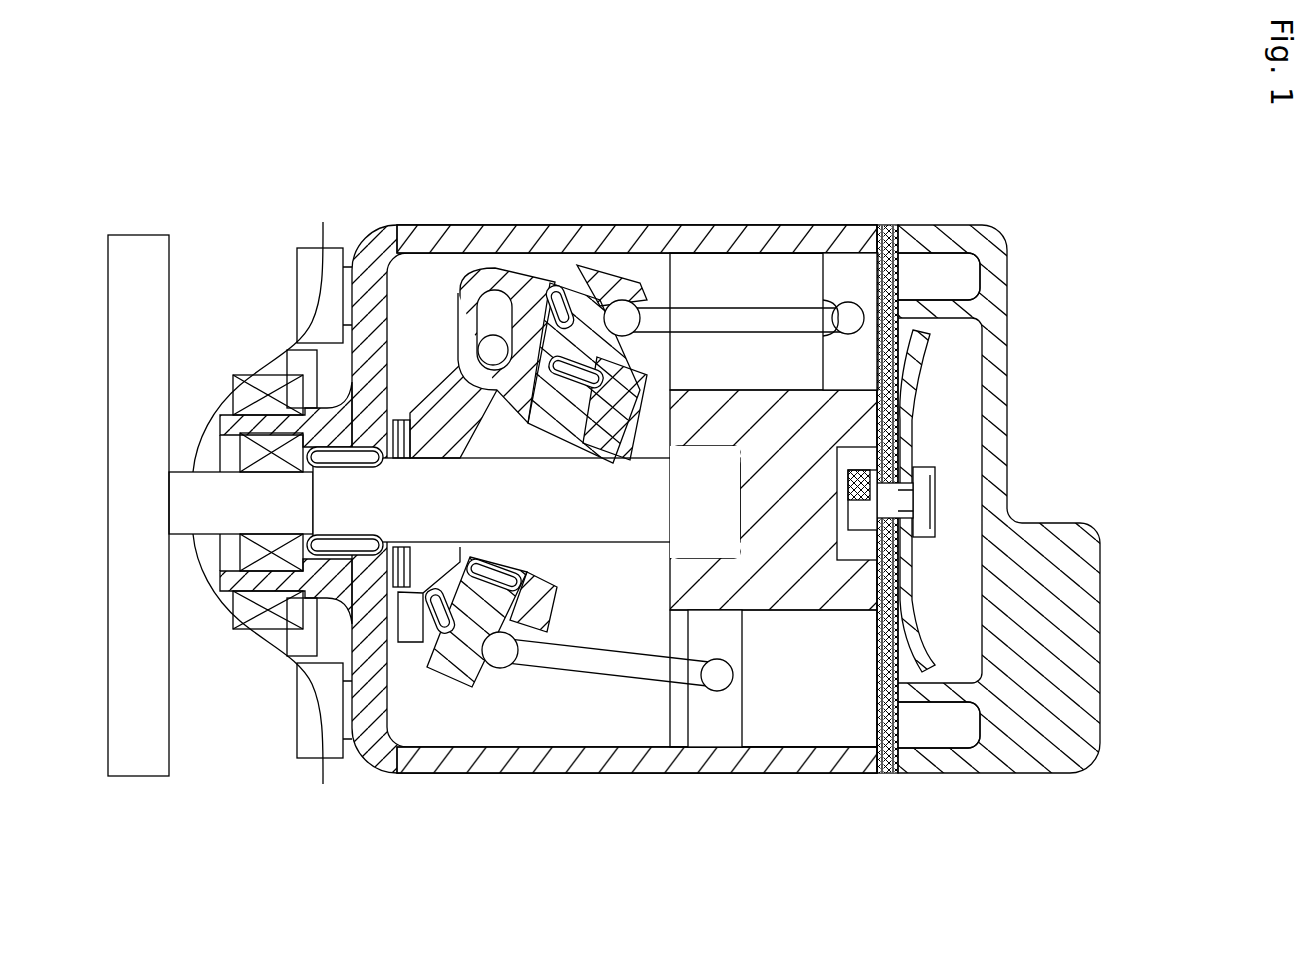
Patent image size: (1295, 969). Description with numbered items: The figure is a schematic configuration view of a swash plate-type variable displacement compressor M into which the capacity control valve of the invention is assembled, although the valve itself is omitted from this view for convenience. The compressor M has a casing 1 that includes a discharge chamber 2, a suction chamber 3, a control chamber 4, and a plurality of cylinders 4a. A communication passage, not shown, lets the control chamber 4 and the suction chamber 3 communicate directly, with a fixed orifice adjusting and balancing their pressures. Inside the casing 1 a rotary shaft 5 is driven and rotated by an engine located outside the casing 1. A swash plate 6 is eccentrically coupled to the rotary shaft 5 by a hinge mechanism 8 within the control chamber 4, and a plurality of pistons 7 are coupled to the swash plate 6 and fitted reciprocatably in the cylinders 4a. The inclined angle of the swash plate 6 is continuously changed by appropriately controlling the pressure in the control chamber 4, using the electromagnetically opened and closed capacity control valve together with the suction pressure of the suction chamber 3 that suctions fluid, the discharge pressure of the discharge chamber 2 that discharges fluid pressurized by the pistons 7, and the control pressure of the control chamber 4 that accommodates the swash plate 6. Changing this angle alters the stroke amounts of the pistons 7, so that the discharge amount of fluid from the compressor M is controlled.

The casing 1 is at (397, 221).
The discharge chamber 2 is at (968, 423).
The suction chamber 3 is at (968, 278).
The control chamber 4 is at (587, 722).
The cylinders 4a is at (768, 262).
The rotary shaft 5 is at (417, 522).
The swash plate 6 is at (560, 303).
The pistons 7 is at (856, 255).
The hinge mechanism 8 is at (432, 410).
The variable displacement compressor M is at (980, 156).